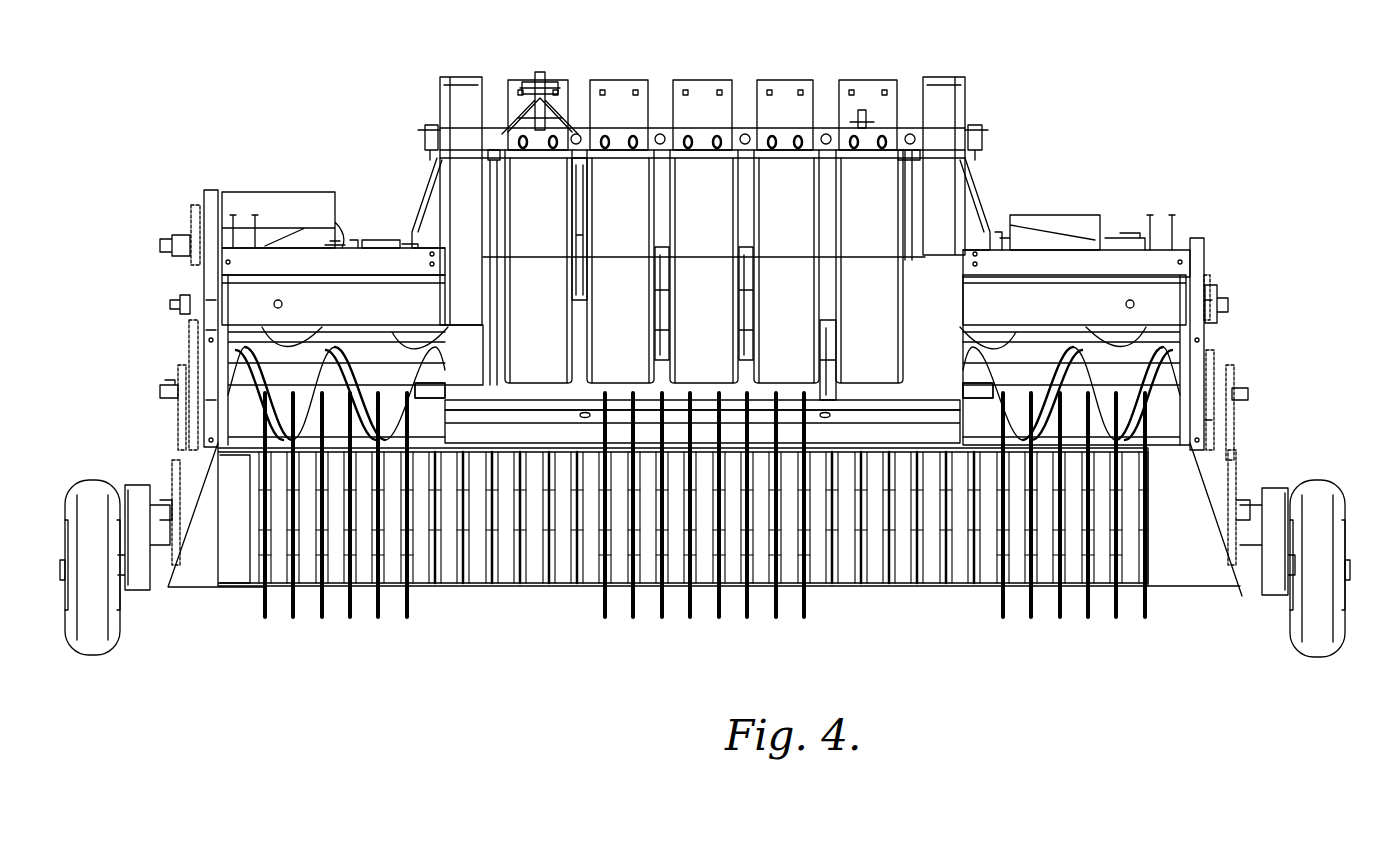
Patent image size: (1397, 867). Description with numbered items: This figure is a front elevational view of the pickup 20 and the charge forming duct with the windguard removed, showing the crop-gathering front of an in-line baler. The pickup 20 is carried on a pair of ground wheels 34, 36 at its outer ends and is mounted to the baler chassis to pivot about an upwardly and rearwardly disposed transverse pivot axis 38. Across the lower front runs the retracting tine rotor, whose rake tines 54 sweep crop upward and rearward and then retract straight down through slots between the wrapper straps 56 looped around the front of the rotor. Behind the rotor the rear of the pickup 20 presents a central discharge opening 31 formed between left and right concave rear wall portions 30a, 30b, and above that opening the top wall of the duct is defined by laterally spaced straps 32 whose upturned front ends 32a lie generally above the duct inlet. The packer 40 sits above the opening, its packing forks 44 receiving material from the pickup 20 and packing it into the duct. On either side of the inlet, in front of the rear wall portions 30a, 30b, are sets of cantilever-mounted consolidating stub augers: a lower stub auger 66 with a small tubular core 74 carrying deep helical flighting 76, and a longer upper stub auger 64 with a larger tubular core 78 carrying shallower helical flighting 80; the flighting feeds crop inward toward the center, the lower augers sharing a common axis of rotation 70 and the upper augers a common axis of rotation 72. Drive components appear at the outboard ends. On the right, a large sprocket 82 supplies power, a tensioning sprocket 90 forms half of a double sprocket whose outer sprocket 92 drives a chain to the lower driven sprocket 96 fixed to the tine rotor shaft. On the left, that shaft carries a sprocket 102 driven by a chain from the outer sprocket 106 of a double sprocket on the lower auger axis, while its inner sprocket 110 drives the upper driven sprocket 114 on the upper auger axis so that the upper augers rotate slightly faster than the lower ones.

The pickup 20 is at (1300, 352).
The right concave rear wall portion 30a is at (649, 360).
The left concave rear wall portion 30b is at (1148, 335).
The discharge opening 31 is at (450, 410).
The straps 32 is at (868, 98).
The upturned front ends 32a is at (876, 165).
The ground wheel 34 is at (95, 648).
The ground wheel 36 is at (1308, 645).
The transverse pivot axis 38 is at (178, 243).
The packer 40 is at (566, 100).
The packing forks 44 is at (580, 250).
The rake tines 54 is at (806, 605).
The wrapper straps 56 is at (905, 572).
The upper stub auger 64 is at (482, 308).
The lower stub auger 66 is at (455, 392).
The common axis of rotation of lower stub augers 70 is at (160, 390).
The common axis of rotation of upper stub augers 72 is at (180, 302).
The tubular core 74 is at (420, 390).
The flighting 76 is at (345, 362).
The tubular core 78 is at (392, 298).
The helical flighting 80 is at (470, 278).
The large sprocket 82 is at (196, 210).
The tensioning sprocket 90 is at (188, 402).
The outer sprocket 92 is at (180, 375).
The lower driven sprocket 96 is at (166, 555).
The sprocket 102 is at (1238, 500).
The outer sprocket 106 is at (1245, 385).
The inner sprocket 110 is at (1220, 370).
The upper driven sprocket 114 is at (1215, 300).